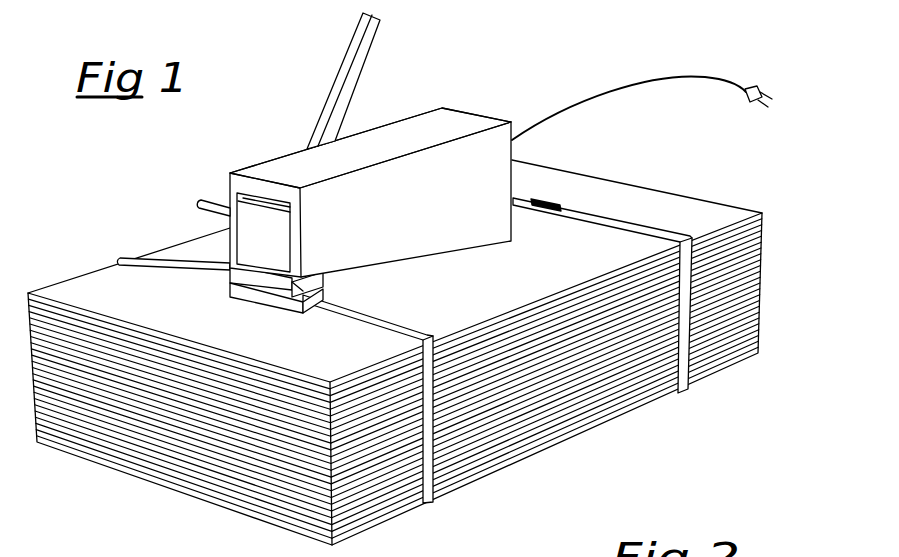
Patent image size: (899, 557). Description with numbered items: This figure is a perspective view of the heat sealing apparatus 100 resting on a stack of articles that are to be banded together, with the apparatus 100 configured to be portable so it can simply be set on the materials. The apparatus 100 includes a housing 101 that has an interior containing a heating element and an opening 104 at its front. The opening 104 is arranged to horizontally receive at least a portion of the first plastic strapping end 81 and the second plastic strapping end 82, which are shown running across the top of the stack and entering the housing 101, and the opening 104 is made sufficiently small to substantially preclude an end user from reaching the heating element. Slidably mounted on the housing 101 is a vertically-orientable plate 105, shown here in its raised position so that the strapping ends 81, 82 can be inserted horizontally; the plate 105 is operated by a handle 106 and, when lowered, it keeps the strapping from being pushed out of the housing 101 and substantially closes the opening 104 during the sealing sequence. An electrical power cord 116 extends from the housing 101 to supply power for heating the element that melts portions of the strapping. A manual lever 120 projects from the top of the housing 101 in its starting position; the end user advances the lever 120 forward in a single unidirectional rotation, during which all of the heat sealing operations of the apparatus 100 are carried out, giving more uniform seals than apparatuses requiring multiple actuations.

The heat sealing apparatus 100 is at (482, 111).
The housing 101 is at (400, 231).
The opening 104 is at (252, 301).
The vertically-orientable plate 105 is at (280, 247).
The handle 106 is at (204, 193).
The electrical power cord 116 is at (633, 92).
The manual lever 120 is at (331, 88).
The first plastic strapping end 81 is at (166, 259).
The second plastic strapping end 82 is at (366, 318).